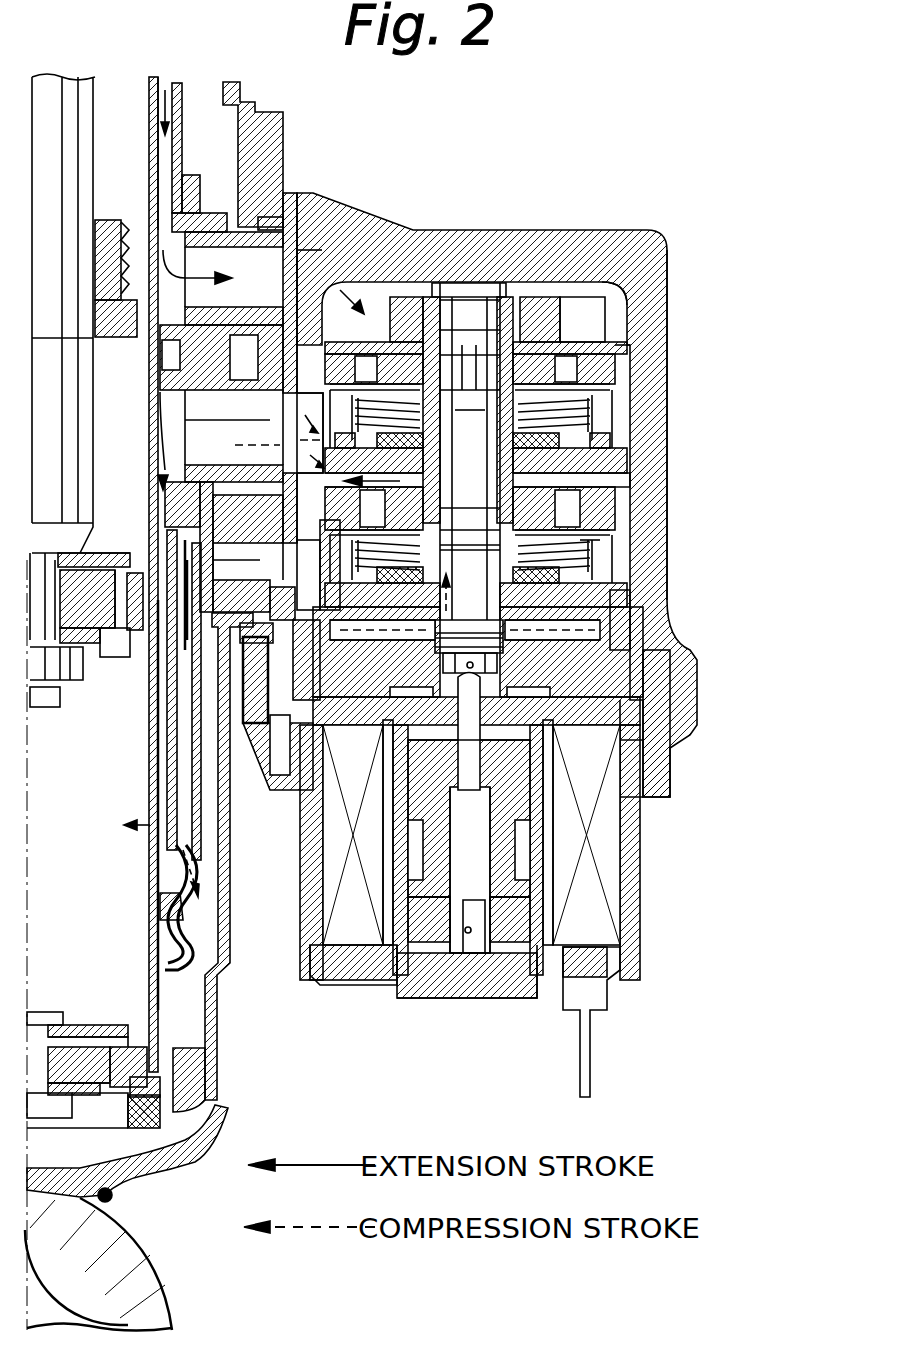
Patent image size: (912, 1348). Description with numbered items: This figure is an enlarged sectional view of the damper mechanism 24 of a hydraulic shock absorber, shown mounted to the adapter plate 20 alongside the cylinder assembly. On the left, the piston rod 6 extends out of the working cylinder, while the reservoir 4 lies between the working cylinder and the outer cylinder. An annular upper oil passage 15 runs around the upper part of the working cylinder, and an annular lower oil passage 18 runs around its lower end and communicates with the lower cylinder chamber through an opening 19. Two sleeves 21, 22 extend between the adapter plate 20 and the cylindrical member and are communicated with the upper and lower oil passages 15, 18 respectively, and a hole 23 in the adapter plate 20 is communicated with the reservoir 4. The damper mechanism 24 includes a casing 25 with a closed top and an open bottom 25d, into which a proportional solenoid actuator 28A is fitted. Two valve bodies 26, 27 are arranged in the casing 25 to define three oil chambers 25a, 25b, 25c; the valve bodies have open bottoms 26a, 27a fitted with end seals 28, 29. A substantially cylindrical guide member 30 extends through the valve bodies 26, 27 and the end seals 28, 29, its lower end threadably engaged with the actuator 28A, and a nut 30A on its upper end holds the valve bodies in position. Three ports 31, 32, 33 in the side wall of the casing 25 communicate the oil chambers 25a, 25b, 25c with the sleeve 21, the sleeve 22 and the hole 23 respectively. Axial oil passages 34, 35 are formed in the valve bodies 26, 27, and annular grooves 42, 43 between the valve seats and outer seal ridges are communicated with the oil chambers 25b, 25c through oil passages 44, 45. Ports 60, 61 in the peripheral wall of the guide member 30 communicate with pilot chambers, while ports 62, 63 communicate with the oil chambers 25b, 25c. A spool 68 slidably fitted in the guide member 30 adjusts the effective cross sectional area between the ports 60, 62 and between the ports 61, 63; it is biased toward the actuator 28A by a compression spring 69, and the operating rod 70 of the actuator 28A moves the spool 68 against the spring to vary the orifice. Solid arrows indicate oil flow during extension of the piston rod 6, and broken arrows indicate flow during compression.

The reservoir 4 is at (183, 990).
The piston rod 6 is at (72, 105).
The upper oil passage 15 is at (185, 155).
The lower oil passage 18 is at (150, 705).
The opening 19 is at (147, 838).
The adapter plate 20 is at (272, 130).
The sleeve 21 is at (292, 240).
The sleeve 22 is at (320, 250).
The hole 23 is at (237, 640).
The damper mechanism 24 is at (666, 285).
The casing 25 is at (662, 265).
The oil chamber 25a is at (585, 280).
The oil chamber 25b is at (635, 500).
The oil chamber 25c is at (640, 610).
The open bottom 25d is at (680, 712).
The valve body 26 is at (625, 345).
The open bottom 26a is at (630, 480).
The valve body 27 is at (640, 508).
The open bottom 27a is at (620, 638).
The end seal 28 is at (628, 450).
The proportional solenoid actuator 28A is at (628, 893).
The end seal 29 is at (620, 605).
The guide member 30 is at (560, 300).
The nut 30A is at (583, 298).
The port 31 is at (360, 260).
The port 32 is at (395, 265).
The port 33 is at (283, 690).
The axial oil passage 34 is at (635, 330).
The axial oil passage 35 is at (625, 555).
The annular groove 42 is at (620, 385).
The annular groove 43 is at (640, 545).
The oil passage 44 is at (615, 400).
The oil passage 45 is at (615, 580).
The port 60 is at (465, 429).
The port 61 is at (490, 597).
The port 62 is at (605, 415).
The port 63 is at (680, 655).
The spool 68 is at (490, 290).
The compression spring 69 is at (460, 290).
The operating rod 70 is at (470, 775).